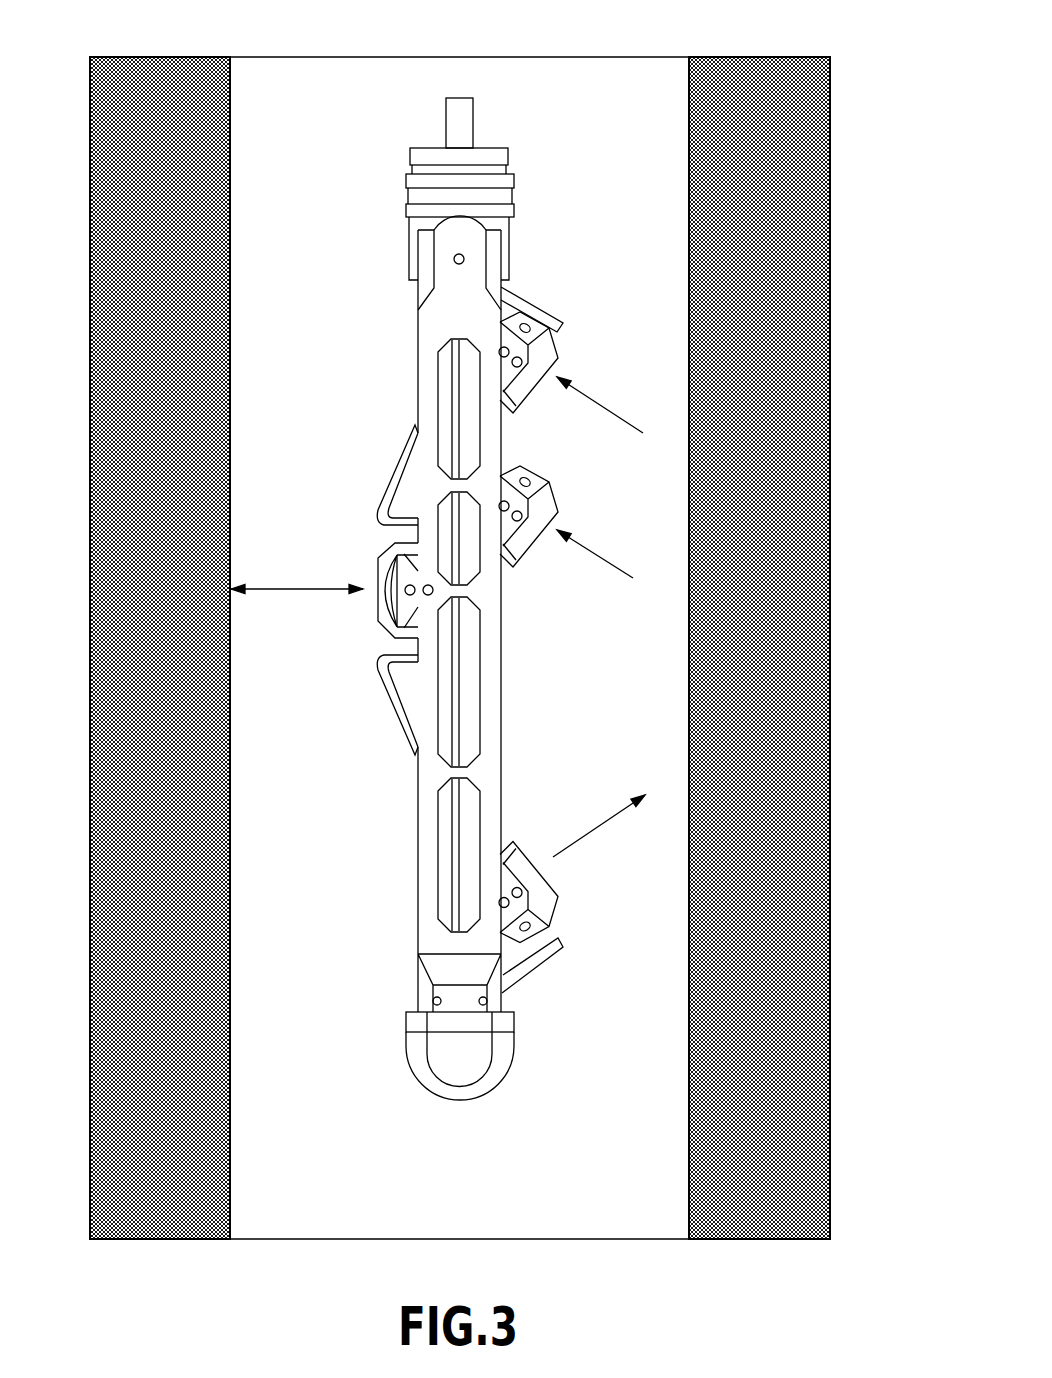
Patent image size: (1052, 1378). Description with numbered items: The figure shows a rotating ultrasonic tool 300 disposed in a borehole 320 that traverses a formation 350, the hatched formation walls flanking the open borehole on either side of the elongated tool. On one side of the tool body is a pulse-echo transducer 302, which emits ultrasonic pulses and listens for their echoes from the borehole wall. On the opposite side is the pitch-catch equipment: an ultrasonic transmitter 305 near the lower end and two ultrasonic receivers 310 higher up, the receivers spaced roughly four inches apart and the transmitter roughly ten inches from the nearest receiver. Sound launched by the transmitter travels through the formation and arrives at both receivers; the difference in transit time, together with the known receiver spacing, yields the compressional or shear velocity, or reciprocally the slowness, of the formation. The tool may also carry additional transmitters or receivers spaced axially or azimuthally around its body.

The tool 300 is at (467, 594).
The pulse-echo transducer 302 is at (386, 556).
The ultrasonic transmitter 305 is at (553, 898).
The ultrasonic receivers 310 is at (543, 510).
The borehole 320 is at (297, 1193).
The formation 350 is at (149, 75).